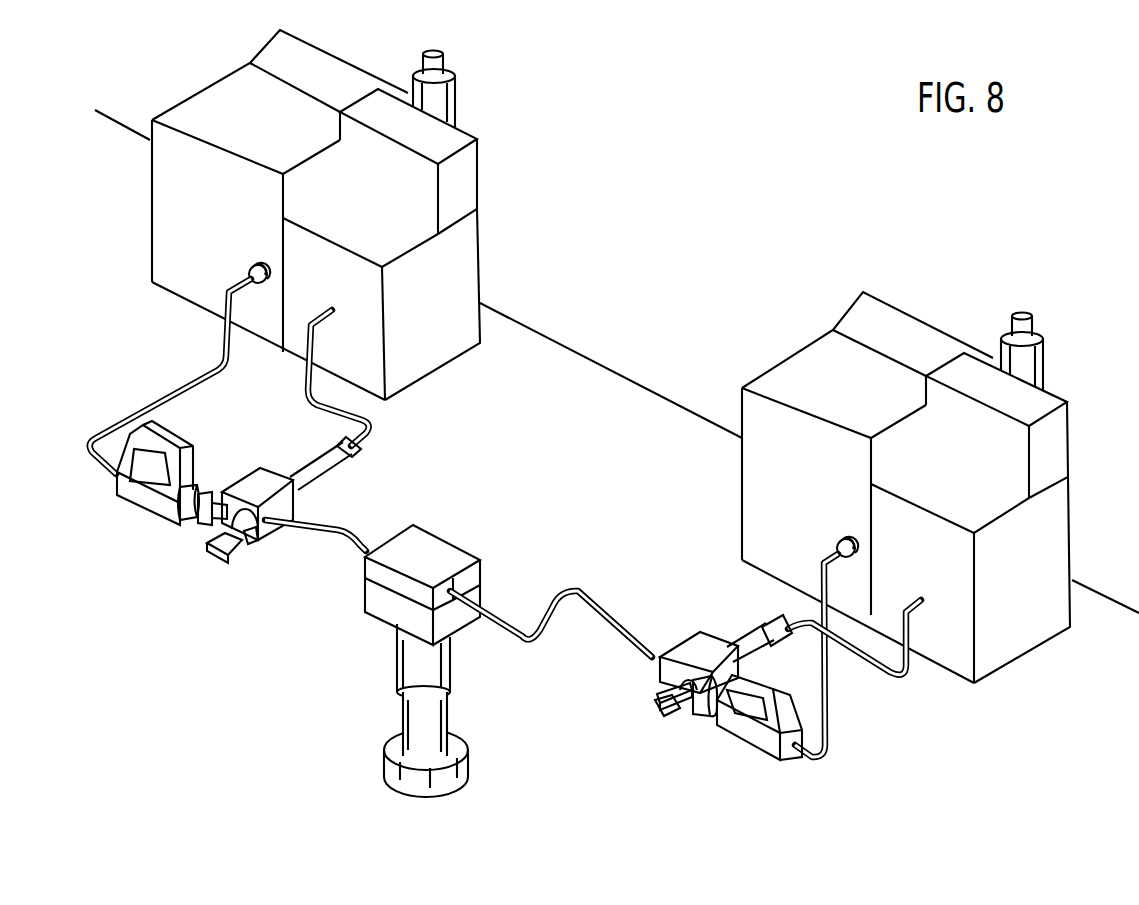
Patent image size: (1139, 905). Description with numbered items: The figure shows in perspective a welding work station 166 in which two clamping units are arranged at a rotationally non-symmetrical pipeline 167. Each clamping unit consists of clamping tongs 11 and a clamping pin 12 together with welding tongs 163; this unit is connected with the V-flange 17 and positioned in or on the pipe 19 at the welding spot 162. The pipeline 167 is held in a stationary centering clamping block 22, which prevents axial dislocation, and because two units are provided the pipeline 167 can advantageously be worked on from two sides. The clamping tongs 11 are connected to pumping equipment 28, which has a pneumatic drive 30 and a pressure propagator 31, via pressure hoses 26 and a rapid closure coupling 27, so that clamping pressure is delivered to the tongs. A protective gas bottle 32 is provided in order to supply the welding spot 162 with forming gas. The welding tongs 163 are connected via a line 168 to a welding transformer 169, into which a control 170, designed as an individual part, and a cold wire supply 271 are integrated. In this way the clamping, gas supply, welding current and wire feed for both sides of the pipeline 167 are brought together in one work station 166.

The welding work station 166 is at (745, 181).
The pumping equipment 28 is at (200, 112).
The pneumatic drive 30 is at (180, 223).
The pressure propagator 31 is at (203, 280).
The cold wire supply 271 is at (467, 185).
The control 170 is at (423, 225).
The welding transformer 169 is at (455, 320).
The protective gas bottle 32 is at (437, 97).
The rapid closure coupling 27 is at (247, 271).
The pressure hoses 26 is at (218, 367).
The line 168 is at (370, 427).
The clamping tongs 11 is at (142, 498).
The clamping pin 12 is at (203, 525).
The V-flange 17 is at (198, 503).
The welding tongs 163 is at (280, 510).
The welding spot 162 is at (203, 540).
The pipe 19 is at (253, 533).
The centering clamping block 22 is at (435, 547).
The pipeline 167 is at (500, 617).